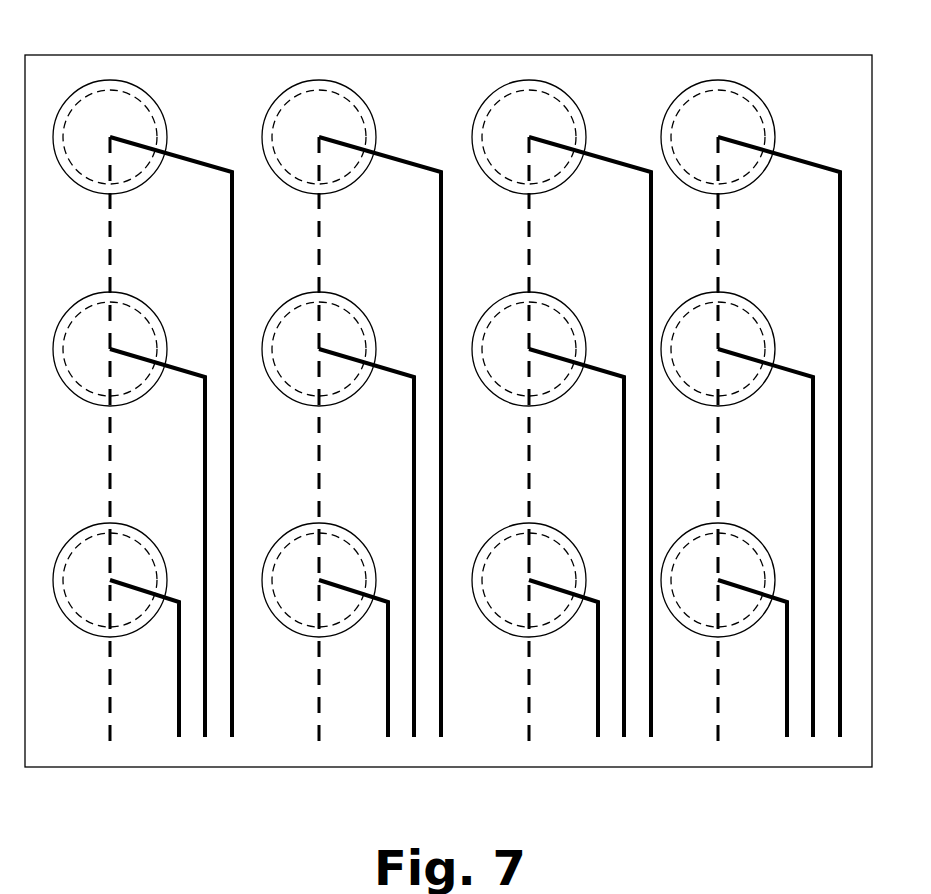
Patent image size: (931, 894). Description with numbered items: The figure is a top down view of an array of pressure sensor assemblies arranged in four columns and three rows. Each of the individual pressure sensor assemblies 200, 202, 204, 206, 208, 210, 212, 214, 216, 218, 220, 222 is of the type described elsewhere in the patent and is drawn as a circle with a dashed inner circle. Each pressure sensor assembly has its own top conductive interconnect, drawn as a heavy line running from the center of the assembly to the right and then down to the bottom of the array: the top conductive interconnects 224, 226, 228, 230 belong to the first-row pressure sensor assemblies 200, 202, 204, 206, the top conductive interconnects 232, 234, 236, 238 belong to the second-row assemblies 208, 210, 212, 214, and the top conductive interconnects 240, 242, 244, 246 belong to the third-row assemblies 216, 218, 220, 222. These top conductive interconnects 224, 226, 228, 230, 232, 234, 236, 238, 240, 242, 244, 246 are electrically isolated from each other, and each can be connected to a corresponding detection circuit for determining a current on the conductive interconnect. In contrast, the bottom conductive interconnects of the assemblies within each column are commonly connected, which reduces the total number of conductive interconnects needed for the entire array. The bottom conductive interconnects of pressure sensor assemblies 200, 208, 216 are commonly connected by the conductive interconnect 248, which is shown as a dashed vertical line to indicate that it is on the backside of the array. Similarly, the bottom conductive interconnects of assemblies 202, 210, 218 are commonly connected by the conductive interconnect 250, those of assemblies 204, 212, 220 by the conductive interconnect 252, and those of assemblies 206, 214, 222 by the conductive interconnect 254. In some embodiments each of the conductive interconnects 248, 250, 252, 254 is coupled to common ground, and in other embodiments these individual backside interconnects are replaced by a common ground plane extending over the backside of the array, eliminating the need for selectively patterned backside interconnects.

The pressure sensor assembly 200 is at (69, 81).
The pressure sensor assembly 202 is at (313, 103).
The pressure sensor assembly 204 is at (523, 103).
The pressure sensor assembly 206 is at (712, 103).
The pressure sensor assembly 208 is at (78, 285).
The pressure sensor assembly 210 is at (317, 313).
The pressure sensor assembly 212 is at (527, 313).
The pressure sensor assembly 214 is at (716, 313).
The pressure sensor assembly 216 is at (78, 512).
The pressure sensor assembly 218 is at (317, 540).
The pressure sensor assembly 220 is at (527, 540).
The pressure sensor assembly 222 is at (716, 540).
The top conductive interconnect 224 is at (199, 160).
The top conductive interconnect 226 is at (380, 410).
The top conductive interconnect 228 is at (590, 410).
The top conductive interconnect 230 is at (779, 410).
The top conductive interconnect 232 is at (191, 370).
The top conductive interconnect 234 is at (370, 516).
The top conductive interconnect 236 is at (580, 516).
The top conductive interconnect 238 is at (769, 516).
The top conductive interconnect 240 is at (178, 597).
The top conductive interconnect 242 is at (364, 622).
The top conductive interconnect 244 is at (574, 622).
The top conductive interconnect 246 is at (763, 622).
The conductive interconnect 248 is at (112, 203).
The conductive interconnect 250 is at (360, 442).
The conductive interconnect 252 is at (570, 442).
The conductive interconnect 254 is at (759, 442).